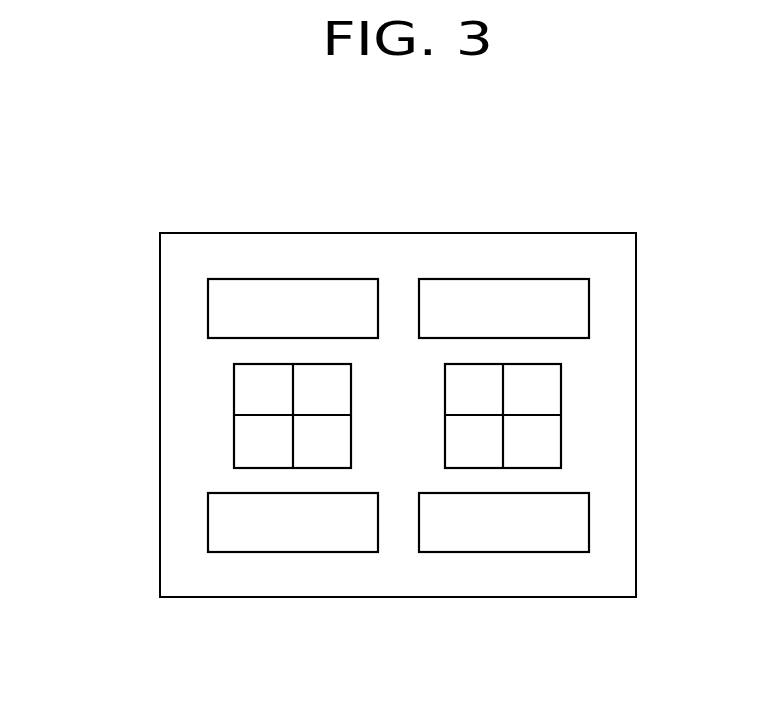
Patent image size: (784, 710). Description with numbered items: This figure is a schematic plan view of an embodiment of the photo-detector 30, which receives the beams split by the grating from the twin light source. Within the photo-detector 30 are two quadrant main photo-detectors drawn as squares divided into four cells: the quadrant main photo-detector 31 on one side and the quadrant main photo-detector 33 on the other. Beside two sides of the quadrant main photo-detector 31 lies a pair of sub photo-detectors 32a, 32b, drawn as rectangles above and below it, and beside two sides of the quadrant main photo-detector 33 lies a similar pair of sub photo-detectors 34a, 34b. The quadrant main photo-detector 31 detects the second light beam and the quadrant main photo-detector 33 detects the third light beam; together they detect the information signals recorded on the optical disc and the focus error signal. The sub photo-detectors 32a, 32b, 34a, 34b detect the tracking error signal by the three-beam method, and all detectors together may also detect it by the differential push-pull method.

The photo-detector 30 is at (145, 284).
The quadrant main photo-detector 31 is at (234, 388).
The quadrant main photo-detector 33 is at (561, 382).
The sub photo-detector 32a is at (291, 295).
The sub photo-detector 32b is at (293, 543).
The sub photo-detector 34a is at (500, 295).
The sub photo-detector 34b is at (502, 543).